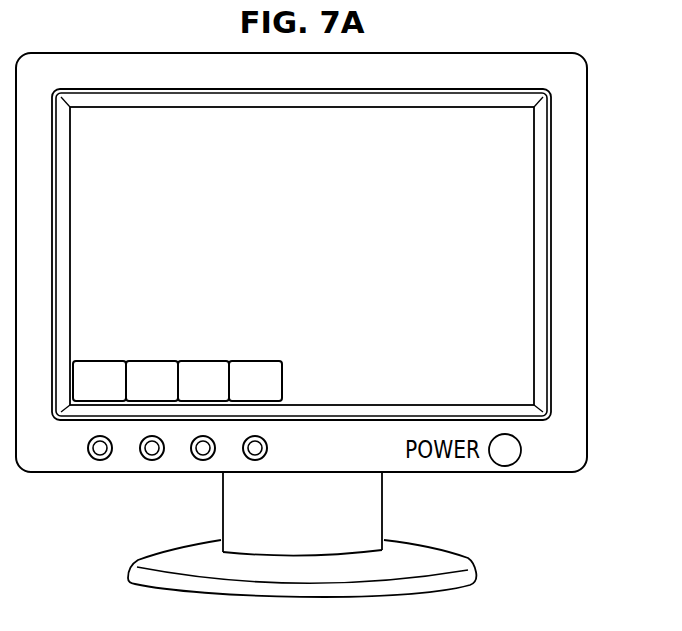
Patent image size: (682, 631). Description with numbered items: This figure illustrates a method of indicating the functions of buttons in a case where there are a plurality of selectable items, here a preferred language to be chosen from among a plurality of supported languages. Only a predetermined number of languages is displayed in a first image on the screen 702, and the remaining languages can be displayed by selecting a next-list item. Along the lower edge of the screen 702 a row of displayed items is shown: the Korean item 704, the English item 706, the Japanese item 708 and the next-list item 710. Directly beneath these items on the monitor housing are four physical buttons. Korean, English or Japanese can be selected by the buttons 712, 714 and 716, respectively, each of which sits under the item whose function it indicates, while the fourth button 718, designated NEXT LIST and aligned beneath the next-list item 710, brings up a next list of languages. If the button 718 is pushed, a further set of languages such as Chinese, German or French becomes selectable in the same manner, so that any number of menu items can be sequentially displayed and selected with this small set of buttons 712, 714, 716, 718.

The display screen 702 is at (518, 248).
The Korean language menu item (KOR) 704 is at (101, 358).
The English language menu item (ENG) 706 is at (153, 358).
The Japanese language menu item (JPN) 708 is at (204, 358).
The next menu item (NEXT) 710 is at (255, 358).
The button 712 is at (100, 461).
The button 714 is at (152, 461).
The button 716 is at (203, 461).
The button designated NEXT LIST 718 is at (255, 461).